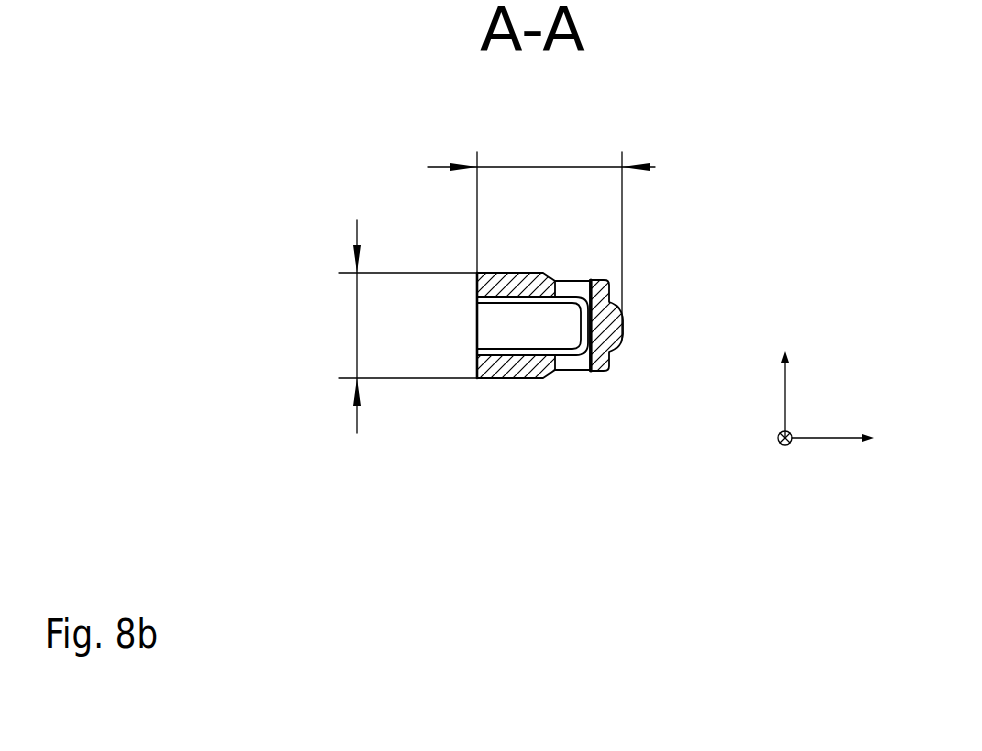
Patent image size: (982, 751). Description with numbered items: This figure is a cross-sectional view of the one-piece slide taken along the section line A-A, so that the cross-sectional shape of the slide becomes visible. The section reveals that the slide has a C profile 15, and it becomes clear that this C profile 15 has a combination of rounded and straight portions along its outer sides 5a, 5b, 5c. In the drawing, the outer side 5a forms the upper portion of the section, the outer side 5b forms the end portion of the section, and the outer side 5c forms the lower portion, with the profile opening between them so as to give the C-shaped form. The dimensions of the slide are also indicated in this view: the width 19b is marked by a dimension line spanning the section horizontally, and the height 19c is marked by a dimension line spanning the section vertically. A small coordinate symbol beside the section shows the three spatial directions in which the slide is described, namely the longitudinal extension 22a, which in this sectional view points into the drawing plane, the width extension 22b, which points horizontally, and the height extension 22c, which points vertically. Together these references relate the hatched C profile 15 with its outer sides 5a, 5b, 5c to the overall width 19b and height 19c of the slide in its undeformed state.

The outer side 5a is at (521, 273).
The outer side 5b is at (625, 329).
The outer side 5c is at (523, 379).
The C profile 15 is at (646, 275).
The width 19b is at (540, 167).
The height 19c is at (357, 322).
The longitudinal extension 22a is at (778, 438).
The width extension 22b is at (823, 440).
The height extension 22c is at (785, 387).